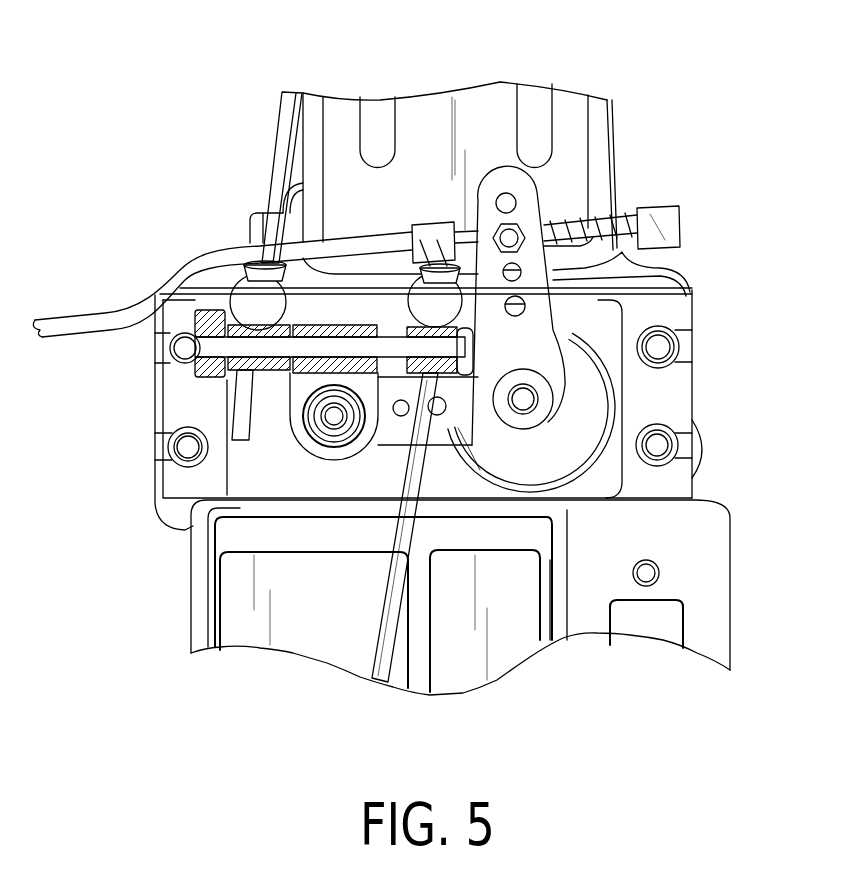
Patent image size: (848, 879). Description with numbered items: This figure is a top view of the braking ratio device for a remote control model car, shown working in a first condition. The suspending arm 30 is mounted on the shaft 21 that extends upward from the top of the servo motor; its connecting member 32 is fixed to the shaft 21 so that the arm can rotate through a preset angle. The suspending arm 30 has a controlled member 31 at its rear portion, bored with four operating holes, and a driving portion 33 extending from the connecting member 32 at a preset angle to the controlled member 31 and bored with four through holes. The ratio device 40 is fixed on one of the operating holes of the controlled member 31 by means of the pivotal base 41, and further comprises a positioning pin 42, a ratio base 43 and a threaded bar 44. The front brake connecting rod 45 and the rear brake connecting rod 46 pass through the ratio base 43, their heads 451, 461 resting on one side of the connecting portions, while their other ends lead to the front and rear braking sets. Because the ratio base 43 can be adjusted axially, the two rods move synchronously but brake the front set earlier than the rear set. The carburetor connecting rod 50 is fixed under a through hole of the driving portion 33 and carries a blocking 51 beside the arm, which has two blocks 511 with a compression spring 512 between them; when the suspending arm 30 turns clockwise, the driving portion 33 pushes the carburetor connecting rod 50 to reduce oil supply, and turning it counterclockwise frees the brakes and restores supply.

The shaft 21 is at (543, 470).
The suspending arm 30 is at (594, 408).
The controlled member 31 is at (463, 433).
The connecting member 32 is at (575, 402).
The driving portion 33 is at (545, 323).
The ratio device 40 is at (320, 468).
The pivotal base 41 is at (303, 437).
The positioning pin 42 is at (300, 417).
The ratio base 43 is at (240, 370).
The threaded bar 44 is at (245, 375).
The front brake connecting rod 45 is at (290, 123).
The head 451 is at (250, 302).
The rear brake connecting rod 46 is at (390, 618).
The head 461 is at (428, 225).
The carburetor connecting rod 50 is at (702, 225).
The blocking 51 is at (663, 207).
The block 511 is at (650, 217).
The compression spring 512 is at (633, 212).